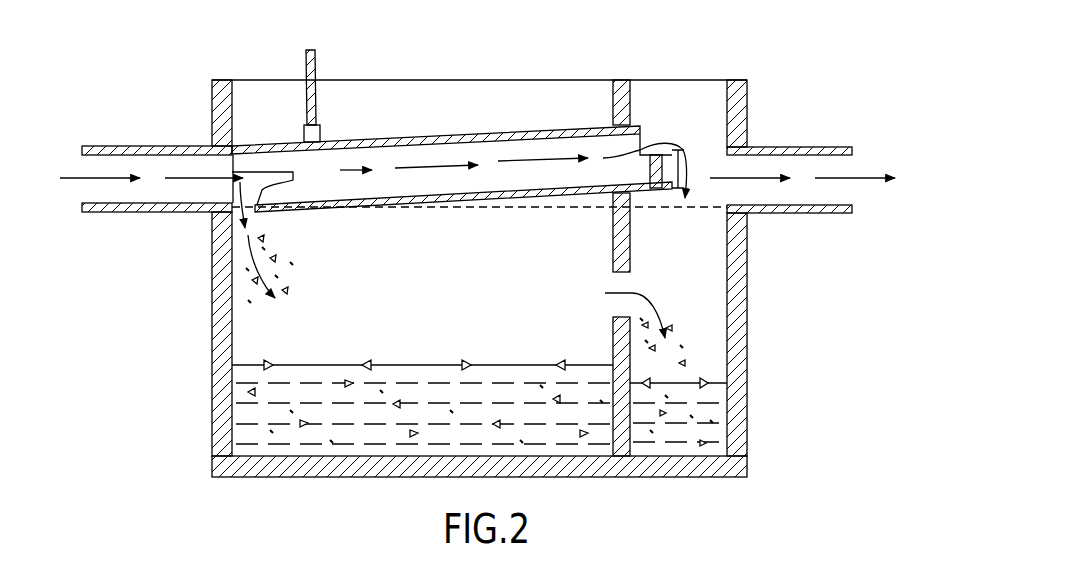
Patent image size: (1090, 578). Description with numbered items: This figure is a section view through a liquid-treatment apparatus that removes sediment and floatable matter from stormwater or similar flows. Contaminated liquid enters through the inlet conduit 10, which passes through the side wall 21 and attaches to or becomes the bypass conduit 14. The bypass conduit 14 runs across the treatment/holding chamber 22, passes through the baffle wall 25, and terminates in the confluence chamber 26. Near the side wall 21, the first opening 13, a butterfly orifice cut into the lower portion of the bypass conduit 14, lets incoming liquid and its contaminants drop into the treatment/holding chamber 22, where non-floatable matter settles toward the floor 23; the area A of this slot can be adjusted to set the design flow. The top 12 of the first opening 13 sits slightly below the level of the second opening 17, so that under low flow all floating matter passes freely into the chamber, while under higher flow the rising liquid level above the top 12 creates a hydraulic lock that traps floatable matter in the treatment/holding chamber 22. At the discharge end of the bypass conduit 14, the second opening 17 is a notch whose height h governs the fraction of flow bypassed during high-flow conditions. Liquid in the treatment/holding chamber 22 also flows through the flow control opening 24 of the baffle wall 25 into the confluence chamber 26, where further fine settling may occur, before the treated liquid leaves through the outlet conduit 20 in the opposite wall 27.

The inlet conduit 10 is at (125, 147).
The top of the first opening 12 is at (258, 160).
The first opening 13 is at (278, 200).
The bypass conduit 14 is at (423, 140).
The second opening 17 is at (642, 135).
The outlet conduit 20 is at (793, 213).
The side wall 21 is at (212, 323).
The treatment/holding chamber 22 is at (446, 276).
The floor 23 is at (330, 452).
The flow control opening 24 is at (613, 283).
The baffle wall 25 is at (613, 108).
The confluence chamber 26 is at (696, 280).
The opposite wall 27 is at (747, 345).
The area of the slot A is at (250, 193).
The height of the notch h is at (685, 152).